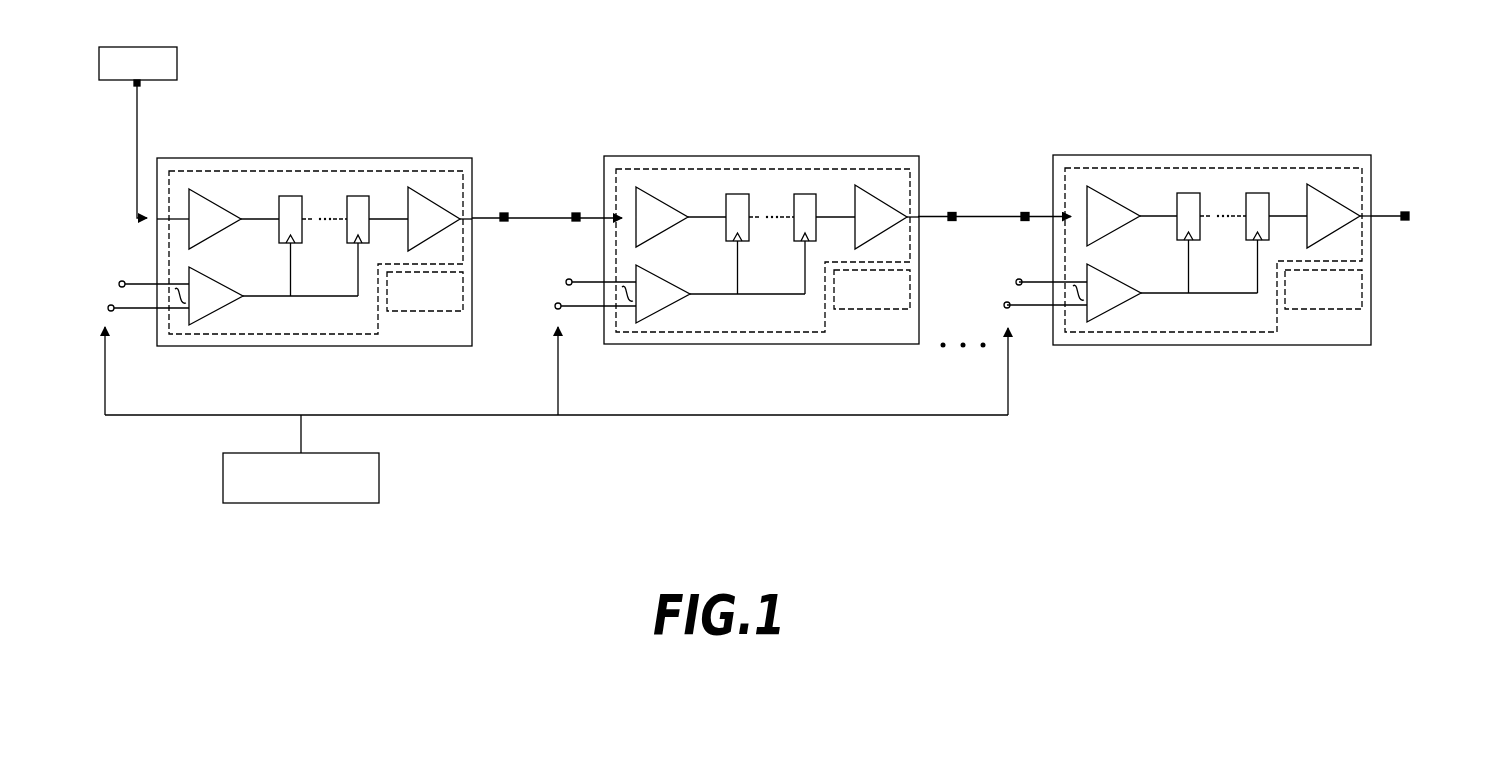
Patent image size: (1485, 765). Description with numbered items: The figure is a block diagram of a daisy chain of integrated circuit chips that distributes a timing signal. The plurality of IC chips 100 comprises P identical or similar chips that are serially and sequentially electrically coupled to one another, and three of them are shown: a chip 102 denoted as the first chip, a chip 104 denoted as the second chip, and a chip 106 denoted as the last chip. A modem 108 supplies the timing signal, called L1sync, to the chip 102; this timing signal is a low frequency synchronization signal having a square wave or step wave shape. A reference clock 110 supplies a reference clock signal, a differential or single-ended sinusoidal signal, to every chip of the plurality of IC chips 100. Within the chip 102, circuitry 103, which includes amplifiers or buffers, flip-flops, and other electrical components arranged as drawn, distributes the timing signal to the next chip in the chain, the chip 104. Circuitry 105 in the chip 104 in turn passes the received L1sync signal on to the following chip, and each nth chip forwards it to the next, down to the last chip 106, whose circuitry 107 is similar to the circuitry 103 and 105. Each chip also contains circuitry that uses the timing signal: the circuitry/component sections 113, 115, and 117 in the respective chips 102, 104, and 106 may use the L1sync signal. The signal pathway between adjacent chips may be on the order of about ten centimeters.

The plurality of IC chips 100 is at (1192, 62).
The chip 102 is at (318, 249).
The circuitry 103 is at (116, 188).
The chip 104 is at (765, 245).
The circuitry 105 is at (737, 275).
The chip 106 is at (1216, 248).
The circuitry 107 is at (1187, 276).
The modem 108 is at (177, 63).
The reference clock 110 is at (381, 471).
The circuitry/component section 113 is at (457, 284).
The circuitry/component section 115 is at (905, 282).
The circuitry/component section 117 is at (1356, 282).